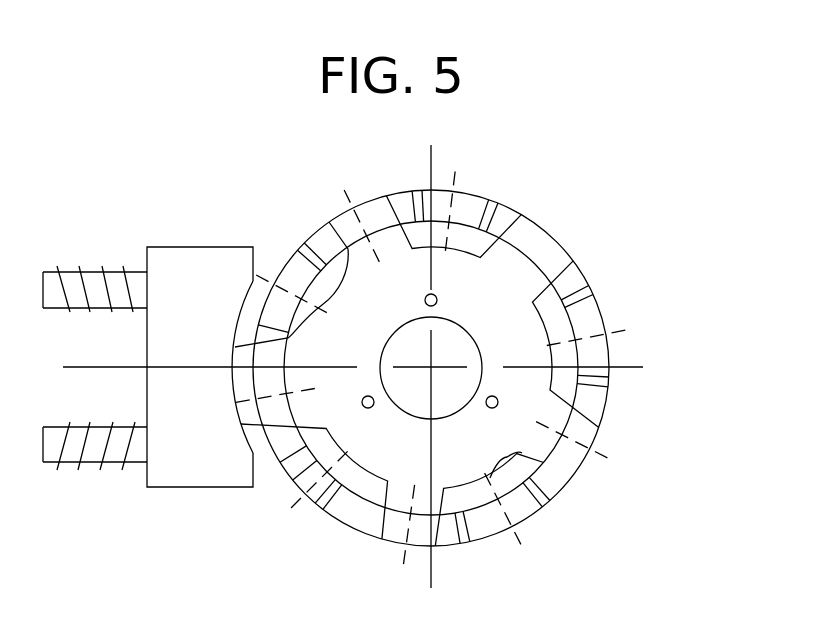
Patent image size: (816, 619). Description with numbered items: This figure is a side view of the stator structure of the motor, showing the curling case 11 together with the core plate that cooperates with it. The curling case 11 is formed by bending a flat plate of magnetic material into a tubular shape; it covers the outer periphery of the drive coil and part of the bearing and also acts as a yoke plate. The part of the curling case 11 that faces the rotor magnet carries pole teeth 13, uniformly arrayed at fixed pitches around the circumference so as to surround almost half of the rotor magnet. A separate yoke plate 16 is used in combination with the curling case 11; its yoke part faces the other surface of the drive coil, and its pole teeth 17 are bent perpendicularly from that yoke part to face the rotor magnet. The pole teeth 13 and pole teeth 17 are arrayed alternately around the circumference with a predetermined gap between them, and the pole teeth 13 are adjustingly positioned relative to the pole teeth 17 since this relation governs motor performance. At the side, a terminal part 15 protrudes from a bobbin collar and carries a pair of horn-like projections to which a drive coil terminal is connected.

The curling case 11 is at (630, 289).
The pole teeth 13 is at (470, 193).
The terminal part 15 is at (190, 267).
The yoke plate 16 is at (487, 452).
The pole teeth 17 is at (567, 243).